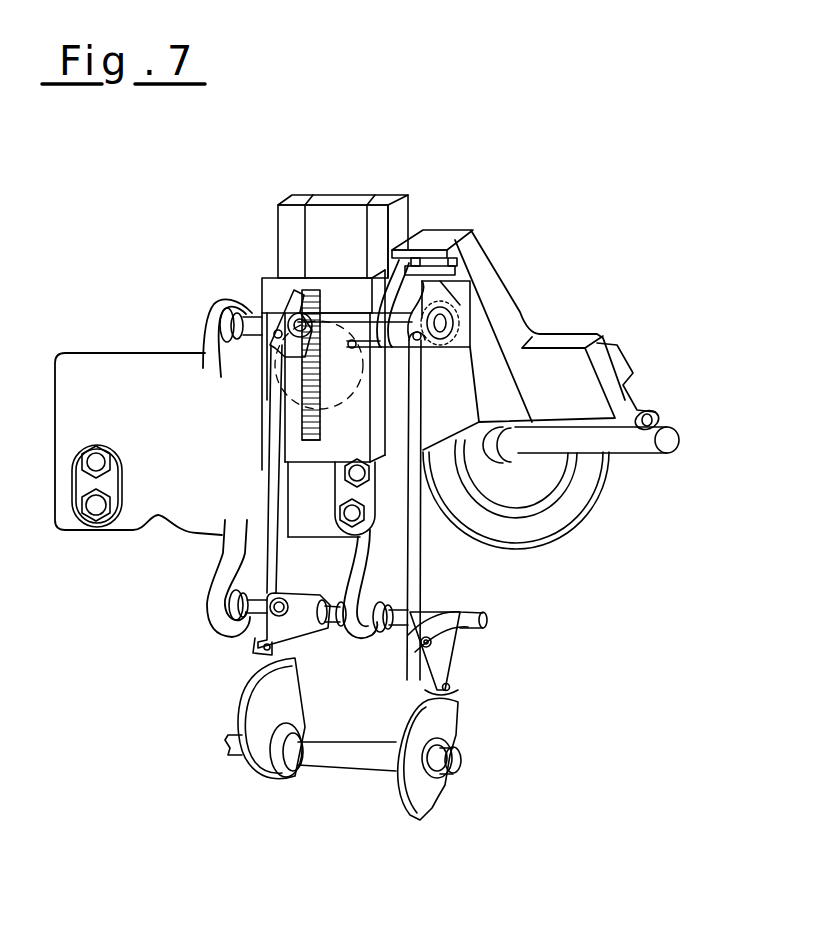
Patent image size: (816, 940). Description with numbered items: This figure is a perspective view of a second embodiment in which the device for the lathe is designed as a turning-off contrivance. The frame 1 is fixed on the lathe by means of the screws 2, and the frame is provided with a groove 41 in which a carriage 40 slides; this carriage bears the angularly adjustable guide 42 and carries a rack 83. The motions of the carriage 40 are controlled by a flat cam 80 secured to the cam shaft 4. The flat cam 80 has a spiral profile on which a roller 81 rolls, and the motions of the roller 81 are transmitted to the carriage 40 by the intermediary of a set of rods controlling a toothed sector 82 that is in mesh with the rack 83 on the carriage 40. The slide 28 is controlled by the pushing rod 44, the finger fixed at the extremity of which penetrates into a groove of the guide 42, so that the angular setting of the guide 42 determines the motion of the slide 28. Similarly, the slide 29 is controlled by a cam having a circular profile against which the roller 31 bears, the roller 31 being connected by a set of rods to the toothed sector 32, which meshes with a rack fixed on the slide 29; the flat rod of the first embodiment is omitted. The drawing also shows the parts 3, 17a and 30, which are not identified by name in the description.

The frame 1 is at (183, 494).
The screws 2 is at (92, 507).
The bracket 3 is at (488, 387).
The cam shaft 4 is at (333, 750).
The drive shaft 17a is at (520, 455).
The slide 28 is at (630, 377).
The slide 29 is at (567, 358).
The cam disc 30 is at (445, 725).
The roller 31 is at (457, 688).
The toothed sector 32 is at (452, 330).
The carriage 40 is at (273, 298).
The groove 41 is at (340, 238).
The angularly adjustable guide 42 is at (337, 355).
The pushing rod 44 is at (378, 343).
The flat cam 80 is at (258, 703).
The roller 81 is at (262, 652).
The toothed sector 82 is at (288, 343).
The rack 83 is at (301, 428).